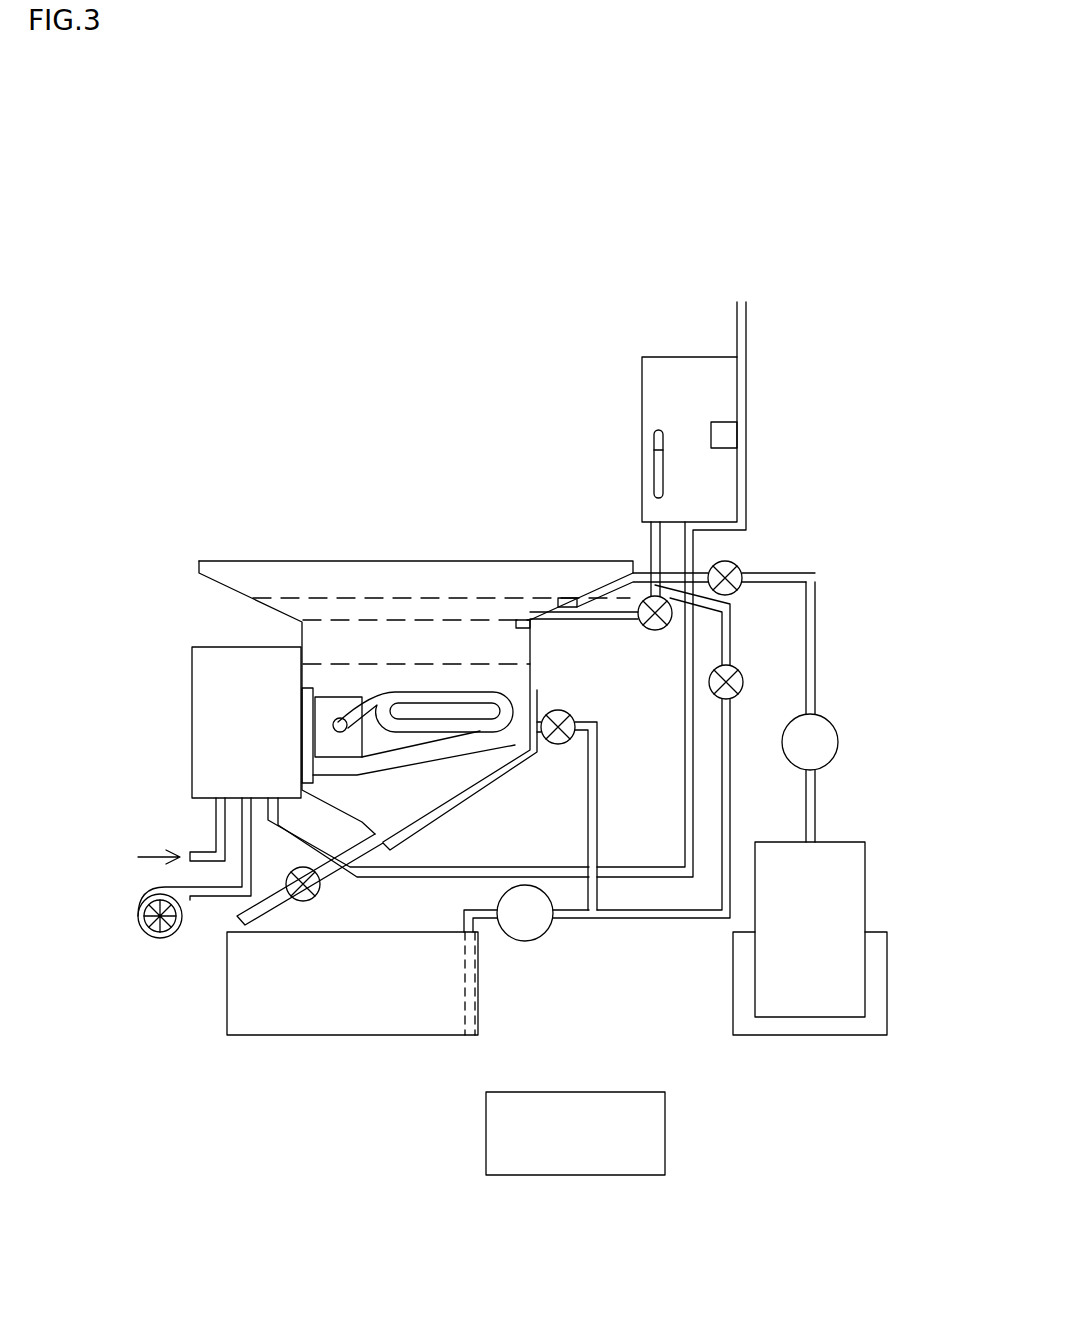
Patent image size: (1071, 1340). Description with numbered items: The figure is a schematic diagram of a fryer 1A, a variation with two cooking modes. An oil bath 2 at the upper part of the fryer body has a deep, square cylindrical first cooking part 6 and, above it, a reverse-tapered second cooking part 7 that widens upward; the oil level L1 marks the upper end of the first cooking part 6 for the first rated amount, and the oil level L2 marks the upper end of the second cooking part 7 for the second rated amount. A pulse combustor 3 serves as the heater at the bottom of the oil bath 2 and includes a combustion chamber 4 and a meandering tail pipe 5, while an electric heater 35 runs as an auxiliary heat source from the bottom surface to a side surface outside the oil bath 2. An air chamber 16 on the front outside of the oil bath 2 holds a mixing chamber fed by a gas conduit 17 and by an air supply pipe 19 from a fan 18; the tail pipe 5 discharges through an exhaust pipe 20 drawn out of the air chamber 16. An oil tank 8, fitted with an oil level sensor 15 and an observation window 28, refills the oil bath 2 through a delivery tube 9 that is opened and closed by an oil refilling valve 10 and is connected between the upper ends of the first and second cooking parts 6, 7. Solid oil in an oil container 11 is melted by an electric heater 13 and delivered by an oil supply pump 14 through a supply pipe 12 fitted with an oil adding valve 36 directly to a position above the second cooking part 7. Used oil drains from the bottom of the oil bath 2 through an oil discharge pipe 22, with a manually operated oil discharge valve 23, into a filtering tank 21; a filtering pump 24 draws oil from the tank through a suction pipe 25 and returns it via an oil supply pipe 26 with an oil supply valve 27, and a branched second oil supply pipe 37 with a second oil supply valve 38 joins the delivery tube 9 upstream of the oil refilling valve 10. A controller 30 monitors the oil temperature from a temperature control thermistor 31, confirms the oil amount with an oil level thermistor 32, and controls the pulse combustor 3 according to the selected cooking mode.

The fryer 1A is at (200, 470).
The oil bath 2 is at (298, 628).
The pulse combustor 3 is at (383, 690).
The combustion chamber 4 is at (334, 700).
The tail pipe 5 is at (462, 700).
The first cooking part 6 is at (528, 657).
The second cooking part 7 is at (477, 607).
The oil tank 8 is at (688, 357).
The delivery tube 9 is at (626, 619).
The oil refilling valve 10 is at (670, 630).
The oil container 11 is at (855, 885).
The supply pipe 12 is at (815, 603).
The electric heater 13 is at (887, 982).
The oil supply pump 14 is at (838, 742).
The oil level sensor 15 is at (737, 432).
The air chamber 16 is at (205, 725).
The gas conduit 17 is at (214, 830).
The fan 18 is at (163, 940).
The air supply pipe 19 is at (215, 900).
The exhaust pipe 20 is at (505, 866).
The filtering tank 21 is at (347, 1037).
The oil discharge pipe 22 is at (288, 893).
The oil discharge valve 23 is at (322, 897).
The filtering pump 24 is at (525, 943).
The suction pipe 25 is at (464, 912).
The oil supply pipe 26 is at (600, 832).
The oil supply valve 27 is at (570, 714).
The observation window 28 is at (654, 445).
The controller 30 is at (612, 1177).
The temperature control thermistor 31 is at (523, 618).
The oil level thermistor 32 is at (565, 597).
The electric heater 35 is at (518, 775).
The oil adding valve 36 is at (742, 568).
The second oil supply pipe 37 is at (732, 813).
The second oil supply valve 38 is at (734, 665).
The oil level at upper end of first cooking part L1 is at (418, 620).
The oil level at upper end of second cooking part L2 is at (370, 593).